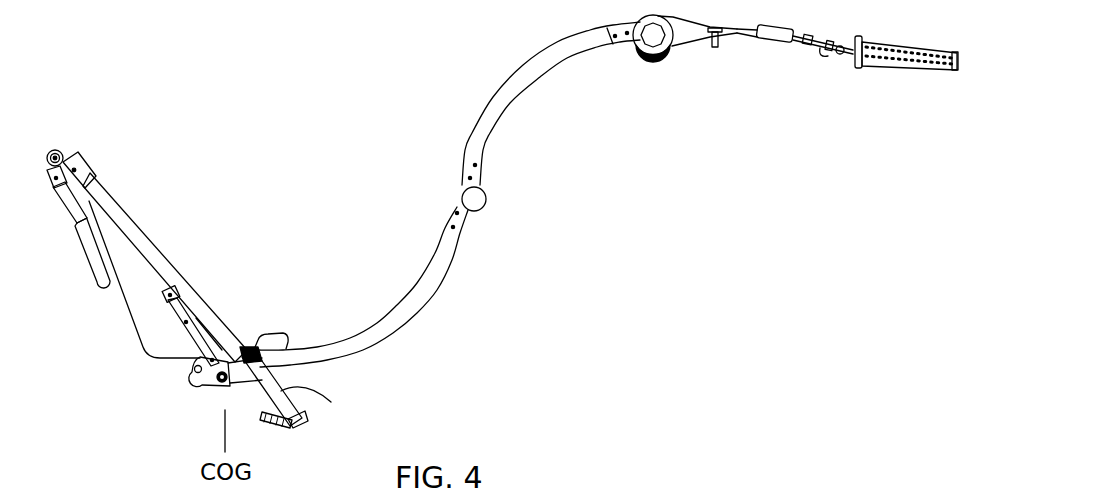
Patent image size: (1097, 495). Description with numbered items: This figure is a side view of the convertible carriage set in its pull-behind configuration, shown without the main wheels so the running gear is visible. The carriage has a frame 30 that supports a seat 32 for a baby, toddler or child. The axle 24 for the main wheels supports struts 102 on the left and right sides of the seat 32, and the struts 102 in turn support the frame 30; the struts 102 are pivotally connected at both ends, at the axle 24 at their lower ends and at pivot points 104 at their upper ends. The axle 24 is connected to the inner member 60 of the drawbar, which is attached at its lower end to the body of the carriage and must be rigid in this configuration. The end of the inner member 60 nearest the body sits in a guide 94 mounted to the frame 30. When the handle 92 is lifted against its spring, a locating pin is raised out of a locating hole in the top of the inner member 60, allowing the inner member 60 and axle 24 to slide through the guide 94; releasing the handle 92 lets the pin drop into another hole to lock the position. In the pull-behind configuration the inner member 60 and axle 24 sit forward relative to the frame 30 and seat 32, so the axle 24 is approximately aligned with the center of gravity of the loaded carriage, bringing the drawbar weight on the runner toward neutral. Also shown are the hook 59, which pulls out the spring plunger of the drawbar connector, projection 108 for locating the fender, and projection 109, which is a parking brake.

The axle 24 is at (222, 386).
The frame 30 is at (152, 243).
The seat 32 is at (138, 334).
The hook 59 is at (268, 422).
The inner member 60 is at (412, 284).
The handle 92 is at (288, 335).
The guide 94 is at (270, 367).
The struts 102 is at (205, 334).
The pivot points 104 is at (178, 290).
The projection 108 is at (187, 323).
The projection 109 is at (197, 373).